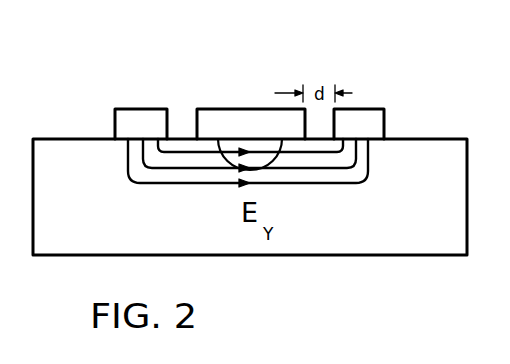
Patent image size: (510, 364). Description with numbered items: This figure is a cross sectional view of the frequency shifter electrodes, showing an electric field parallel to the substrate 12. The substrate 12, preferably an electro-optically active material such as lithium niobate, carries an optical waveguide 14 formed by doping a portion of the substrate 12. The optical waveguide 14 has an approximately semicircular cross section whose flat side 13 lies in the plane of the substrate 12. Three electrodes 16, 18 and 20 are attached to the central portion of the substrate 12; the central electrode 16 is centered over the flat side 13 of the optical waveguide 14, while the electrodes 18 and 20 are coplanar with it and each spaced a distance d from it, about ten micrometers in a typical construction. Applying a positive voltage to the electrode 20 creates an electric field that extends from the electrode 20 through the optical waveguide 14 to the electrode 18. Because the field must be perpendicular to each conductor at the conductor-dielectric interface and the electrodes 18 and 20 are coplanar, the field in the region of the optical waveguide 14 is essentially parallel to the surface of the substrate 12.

The substrate 12 is at (397, 257).
The flat side 13 is at (240, 139).
The optical waveguide 14 is at (226, 163).
The electrode 16 is at (262, 109).
The electrode 18 is at (365, 108).
The electrode 20 is at (137, 108).